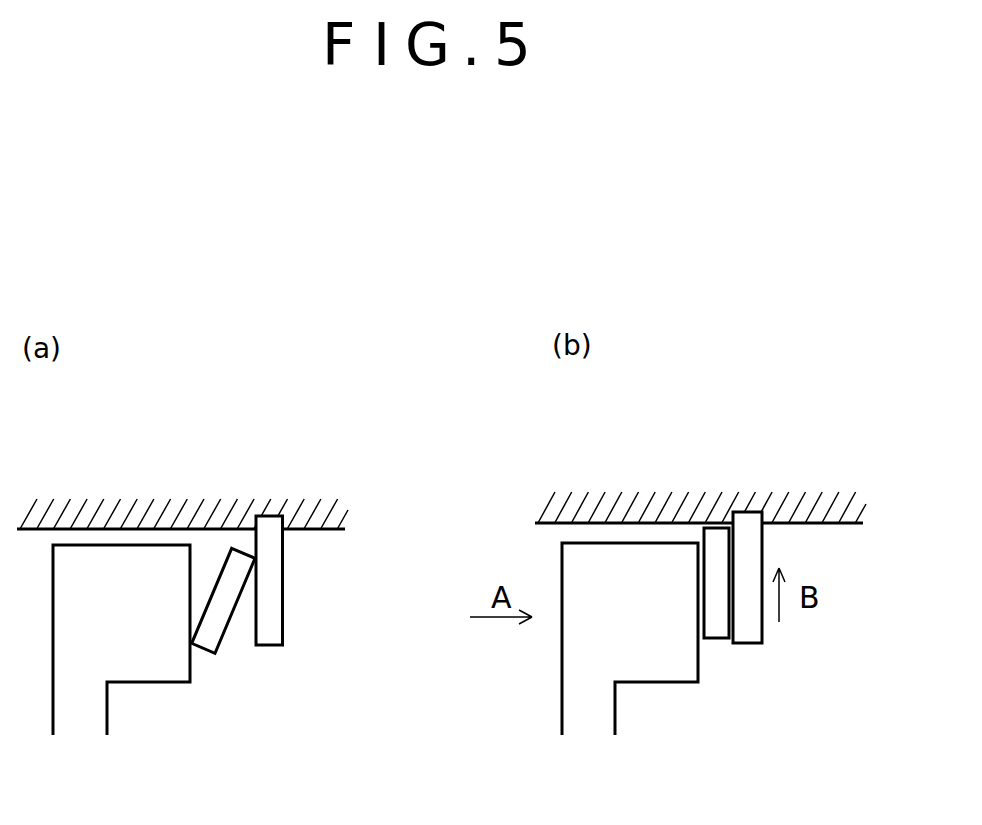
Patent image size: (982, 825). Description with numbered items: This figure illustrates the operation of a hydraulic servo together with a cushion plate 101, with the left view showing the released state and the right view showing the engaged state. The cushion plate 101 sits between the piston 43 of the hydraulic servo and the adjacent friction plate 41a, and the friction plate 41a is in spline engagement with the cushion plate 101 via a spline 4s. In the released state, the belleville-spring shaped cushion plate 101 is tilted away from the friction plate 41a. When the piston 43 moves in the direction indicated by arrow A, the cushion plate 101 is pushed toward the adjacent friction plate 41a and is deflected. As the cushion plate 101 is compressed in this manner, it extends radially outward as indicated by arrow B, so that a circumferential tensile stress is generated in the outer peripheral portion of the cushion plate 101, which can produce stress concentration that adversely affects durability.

The spline 4s is at (317, 523).
The piston 43 is at (132, 670).
The friction plate 41a is at (273, 623).
The cushion plate 101 is at (202, 643).